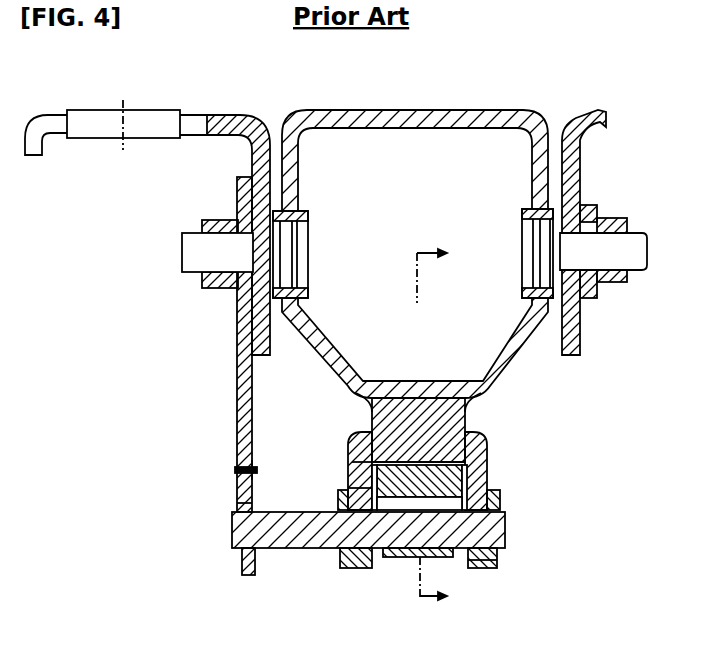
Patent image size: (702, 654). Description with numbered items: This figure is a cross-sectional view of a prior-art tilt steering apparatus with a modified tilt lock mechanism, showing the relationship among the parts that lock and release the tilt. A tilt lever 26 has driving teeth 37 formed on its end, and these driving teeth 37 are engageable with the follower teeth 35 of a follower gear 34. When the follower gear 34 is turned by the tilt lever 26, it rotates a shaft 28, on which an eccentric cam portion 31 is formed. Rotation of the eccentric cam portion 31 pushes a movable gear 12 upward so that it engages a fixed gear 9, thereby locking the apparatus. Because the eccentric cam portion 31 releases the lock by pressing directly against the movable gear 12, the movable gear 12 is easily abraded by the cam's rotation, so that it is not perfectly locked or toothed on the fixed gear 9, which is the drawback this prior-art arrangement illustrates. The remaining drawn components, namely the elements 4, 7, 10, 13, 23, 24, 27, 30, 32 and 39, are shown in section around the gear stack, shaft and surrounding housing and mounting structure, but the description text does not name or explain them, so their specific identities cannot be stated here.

The housing 4 is at (425, 110).
The section line 7 is at (445, 426).
The fixed gear 9 is at (462, 420).
The lower block 10 is at (470, 470).
The movable gear 12 is at (492, 498).
The bearing 13 is at (352, 462).
The bracket 23 is at (255, 112).
The bolt 24 is at (195, 265).
The tilt lever 26 is at (237, 372).
The clamp cup 27 is at (355, 442).
The shaft 28 is at (505, 528).
The strip 30 is at (392, 557).
The eccentric cam portion 31 is at (407, 438).
The lower ring 32 is at (348, 488).
The follower gear 34 is at (240, 503).
The follower teeth 35 is at (235, 468).
The driving teeth 37 is at (258, 470).
The right foot 39 is at (455, 557).